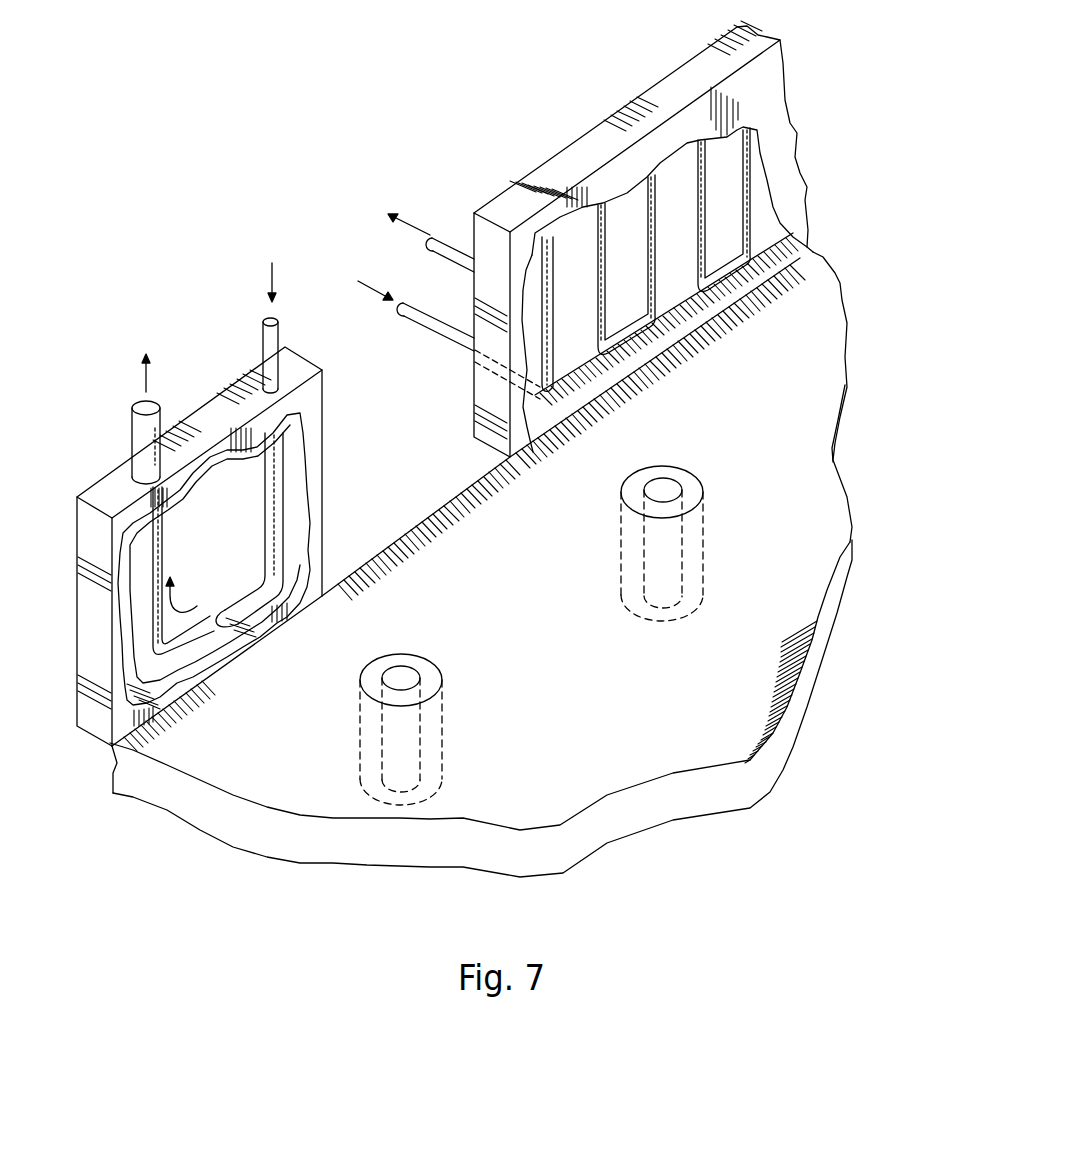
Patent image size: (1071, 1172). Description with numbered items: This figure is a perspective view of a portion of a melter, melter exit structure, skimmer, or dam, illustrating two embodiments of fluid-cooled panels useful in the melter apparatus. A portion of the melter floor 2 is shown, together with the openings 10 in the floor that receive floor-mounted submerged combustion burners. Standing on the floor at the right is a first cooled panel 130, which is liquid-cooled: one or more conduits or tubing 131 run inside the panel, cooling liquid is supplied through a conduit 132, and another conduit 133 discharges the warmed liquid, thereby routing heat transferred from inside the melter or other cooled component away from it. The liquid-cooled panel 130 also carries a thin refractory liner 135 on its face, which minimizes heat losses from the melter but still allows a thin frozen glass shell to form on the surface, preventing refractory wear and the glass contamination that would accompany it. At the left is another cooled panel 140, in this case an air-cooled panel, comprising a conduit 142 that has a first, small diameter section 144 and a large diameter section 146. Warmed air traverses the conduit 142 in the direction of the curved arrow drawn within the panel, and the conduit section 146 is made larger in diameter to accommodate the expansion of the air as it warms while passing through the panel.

The melter floor 2 is at (272, 765).
The openings for floor-mounted submerged combustion burners 10 is at (425, 665).
The first cooled panel 130 is at (661, 94).
The conduits or tubing 131 is at (705, 188).
The supply conduit 132 is at (432, 332).
The discharge conduit 133 is at (447, 243).
The thin refractory liner 135 is at (595, 188).
The air-cooled panel 140 is at (254, 383).
The conduit 142 is at (162, 563).
The small diameter section 144 is at (280, 333).
The large diameter section 146 is at (125, 434).